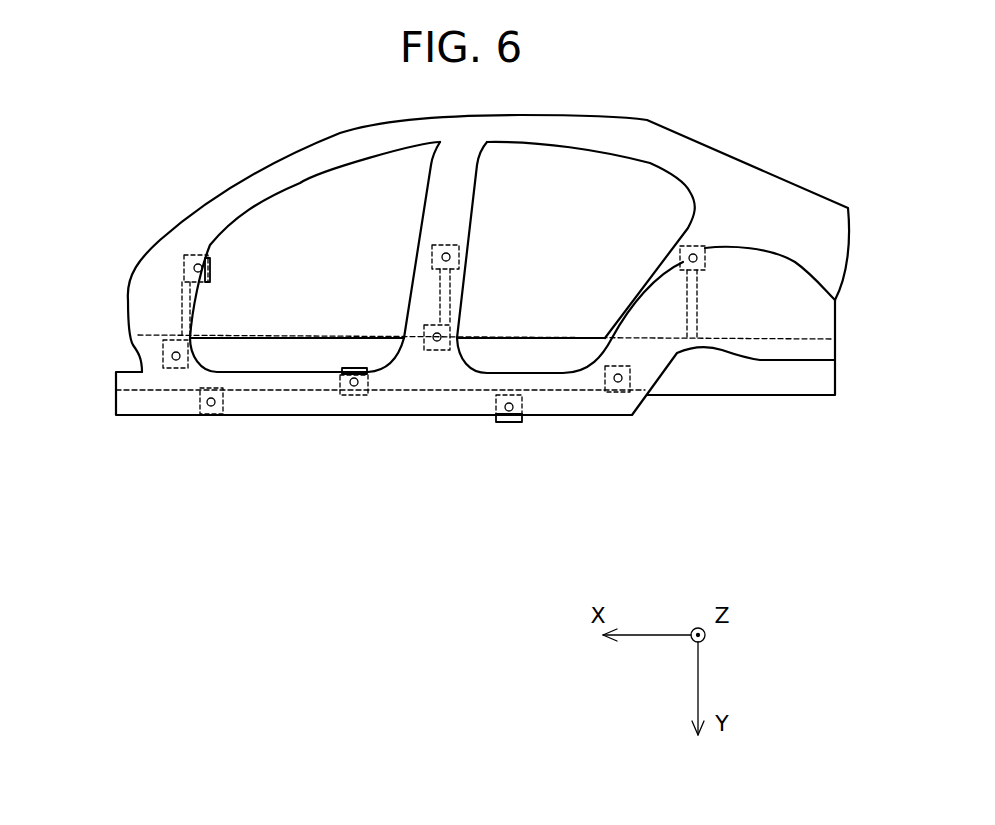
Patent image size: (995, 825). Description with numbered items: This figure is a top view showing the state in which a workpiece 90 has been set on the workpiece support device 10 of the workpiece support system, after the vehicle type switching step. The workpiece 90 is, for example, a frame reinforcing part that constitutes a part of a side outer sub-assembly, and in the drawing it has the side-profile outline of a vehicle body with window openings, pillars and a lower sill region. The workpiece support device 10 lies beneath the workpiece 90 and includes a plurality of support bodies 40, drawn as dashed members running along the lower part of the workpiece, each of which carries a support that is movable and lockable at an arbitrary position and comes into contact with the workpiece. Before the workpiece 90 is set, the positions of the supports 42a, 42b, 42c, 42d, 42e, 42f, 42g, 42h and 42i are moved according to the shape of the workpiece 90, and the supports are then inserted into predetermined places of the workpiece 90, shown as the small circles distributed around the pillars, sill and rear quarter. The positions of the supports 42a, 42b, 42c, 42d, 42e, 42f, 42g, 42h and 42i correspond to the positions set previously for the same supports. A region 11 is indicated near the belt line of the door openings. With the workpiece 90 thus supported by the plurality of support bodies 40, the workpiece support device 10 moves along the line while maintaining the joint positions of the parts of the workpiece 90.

The workpiece 90 is at (770, 182).
The workpiece support device 10 is at (687, 385).
The side sill / belt line 11 is at (288, 345).
The support bodies 40 is at (205, 308).
The support 42a is at (172, 356).
The support 42b is at (203, 266).
The support 42c is at (211, 406).
The support 42d is at (354, 386).
The support 42e is at (450, 256).
The support 42f is at (437, 341).
The support 42g is at (509, 411).
The support 42h is at (618, 382).
The support 42i is at (689, 258).